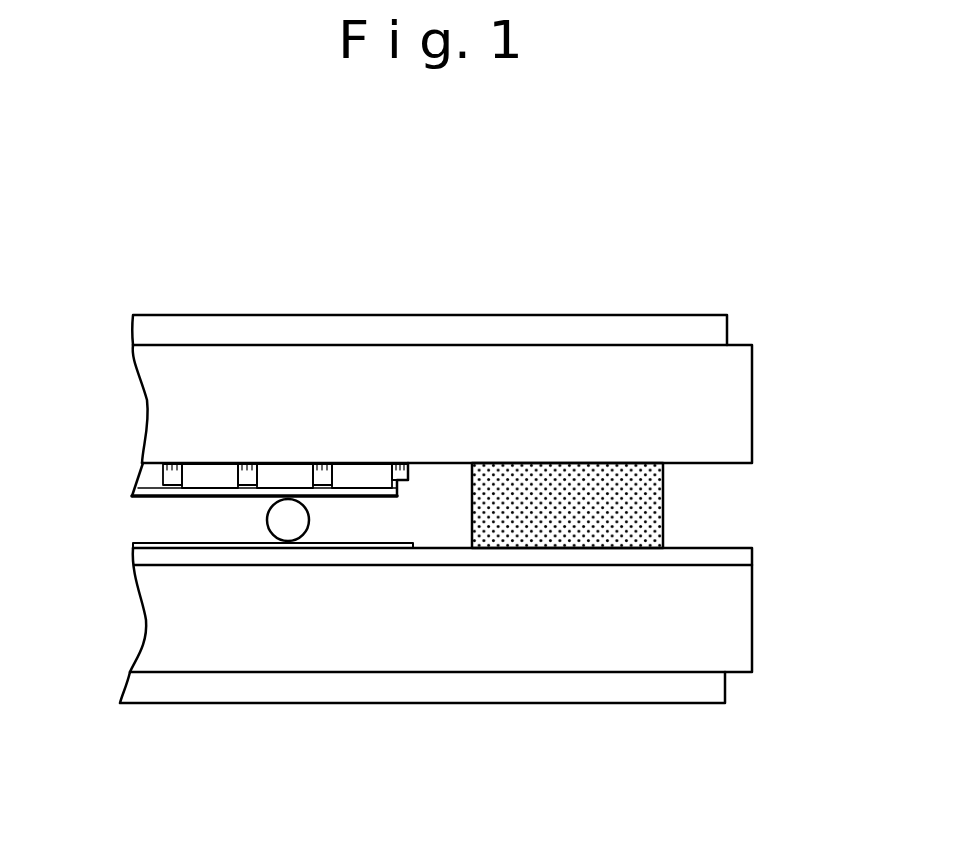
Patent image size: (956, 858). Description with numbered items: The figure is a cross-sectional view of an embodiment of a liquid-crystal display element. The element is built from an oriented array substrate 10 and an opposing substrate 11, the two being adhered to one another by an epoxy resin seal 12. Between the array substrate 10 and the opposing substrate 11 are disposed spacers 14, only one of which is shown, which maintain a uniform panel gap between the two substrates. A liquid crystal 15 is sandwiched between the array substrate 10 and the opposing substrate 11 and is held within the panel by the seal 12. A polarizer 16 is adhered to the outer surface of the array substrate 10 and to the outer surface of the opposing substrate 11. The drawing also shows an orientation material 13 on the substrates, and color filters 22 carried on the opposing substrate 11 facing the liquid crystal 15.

The array substrate 10 is at (752, 628).
The opposing substrate 11 is at (752, 408).
The seal 12 is at (665, 510).
The orientation material 13 is at (353, 497).
The spacer 14 is at (265, 520).
The liquid crystal 15 is at (443, 522).
The polarizer 16 is at (571, 315).
The color filters 22 is at (347, 477).